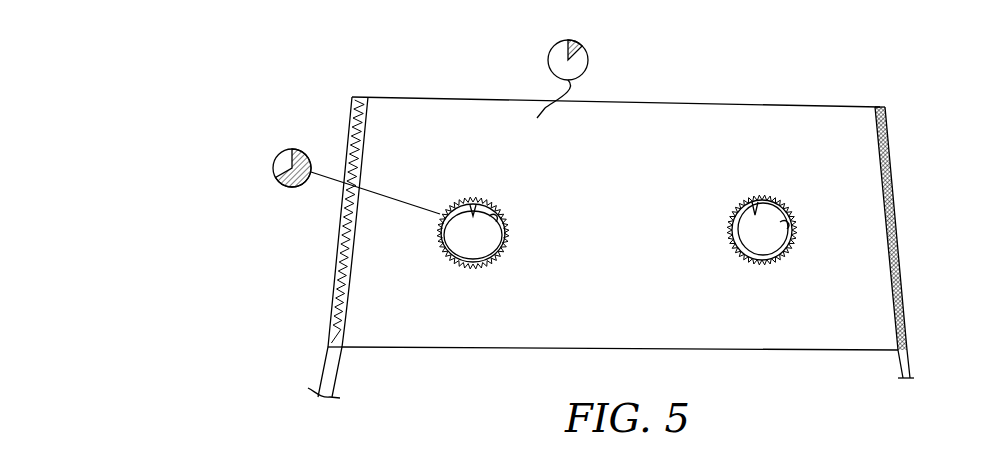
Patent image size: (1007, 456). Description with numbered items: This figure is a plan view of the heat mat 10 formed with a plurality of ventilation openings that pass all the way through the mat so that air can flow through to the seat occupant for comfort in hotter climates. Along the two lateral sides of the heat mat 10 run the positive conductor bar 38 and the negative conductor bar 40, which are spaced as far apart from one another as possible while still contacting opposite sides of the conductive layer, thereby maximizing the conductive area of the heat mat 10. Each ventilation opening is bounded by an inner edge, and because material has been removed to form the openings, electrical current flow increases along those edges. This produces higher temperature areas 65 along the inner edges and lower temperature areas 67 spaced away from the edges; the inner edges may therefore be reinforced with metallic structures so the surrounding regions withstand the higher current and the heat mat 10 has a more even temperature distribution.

The heat mat 10 is at (857, 80).
The positive conductor bar 38 is at (325, 368).
The negative conductor bar 40 is at (908, 368).
The higher temperature area 65 is at (292, 187).
The lower temperature area 67 is at (588, 59).